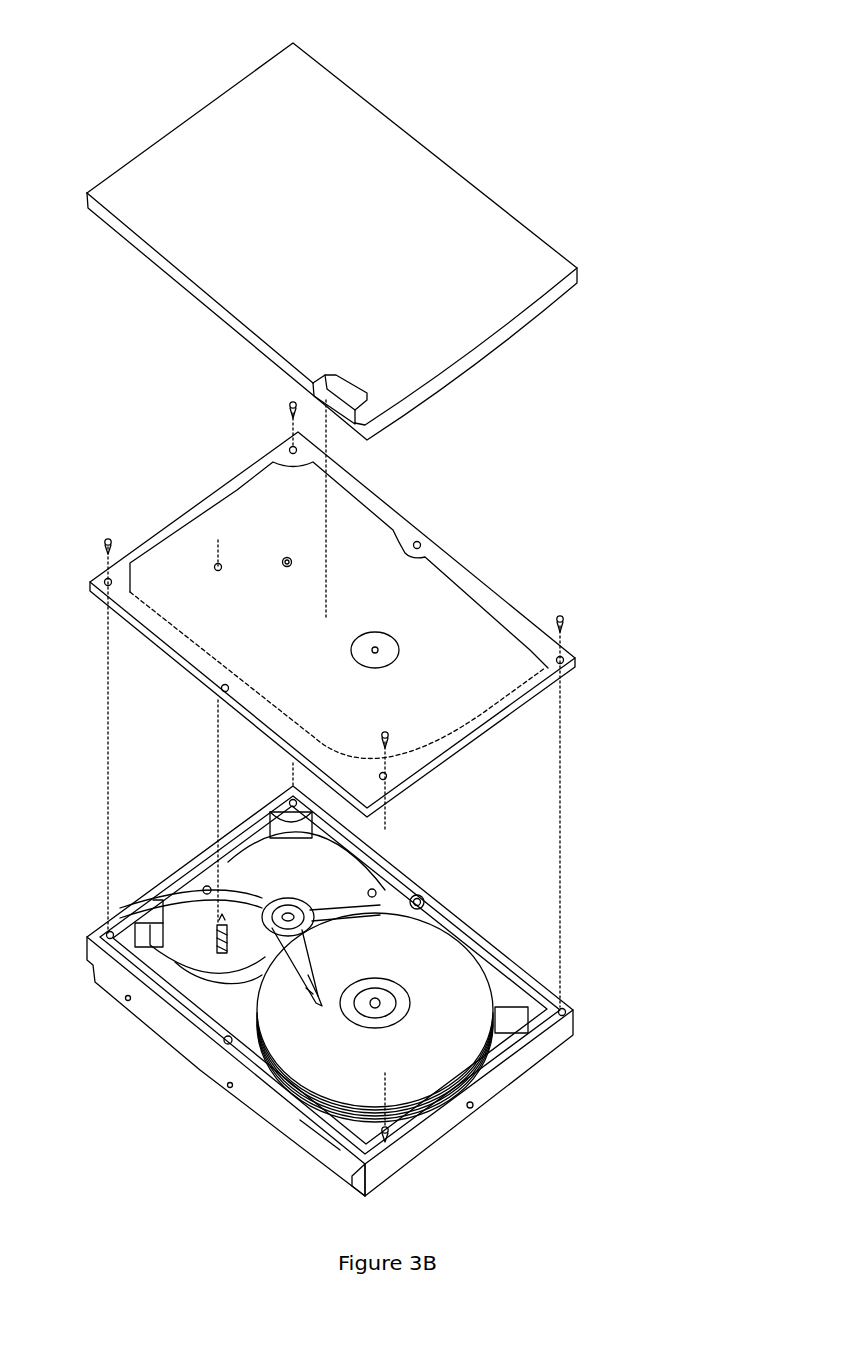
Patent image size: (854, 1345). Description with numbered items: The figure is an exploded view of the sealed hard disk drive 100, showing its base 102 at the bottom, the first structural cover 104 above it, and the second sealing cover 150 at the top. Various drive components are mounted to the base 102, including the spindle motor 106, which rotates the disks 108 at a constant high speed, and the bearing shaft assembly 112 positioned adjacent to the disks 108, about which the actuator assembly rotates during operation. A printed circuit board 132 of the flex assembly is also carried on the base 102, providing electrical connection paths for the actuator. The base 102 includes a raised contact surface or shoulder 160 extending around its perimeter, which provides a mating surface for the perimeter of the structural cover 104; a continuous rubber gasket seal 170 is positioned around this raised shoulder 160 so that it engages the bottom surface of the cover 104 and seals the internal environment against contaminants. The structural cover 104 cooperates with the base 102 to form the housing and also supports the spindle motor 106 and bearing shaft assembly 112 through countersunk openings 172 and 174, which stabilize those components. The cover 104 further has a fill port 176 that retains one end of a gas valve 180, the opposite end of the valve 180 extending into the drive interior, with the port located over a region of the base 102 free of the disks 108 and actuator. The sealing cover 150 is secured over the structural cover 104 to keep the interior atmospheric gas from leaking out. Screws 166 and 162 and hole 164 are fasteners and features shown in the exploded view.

The disk drive 100 is at (618, 495).
The sealing cover 150 is at (468, 170).
The structural cover 104 is at (478, 581).
The countersunk opening 172 is at (380, 656).
The countersunk opening 174 is at (287, 558).
The fill port 176 is at (220, 568).
The fastener / screw 166 is at (109, 538).
The fastener / screw 162 is at (392, 778).
The base 102 is at (470, 1107).
The mounting hole 164 is at (108, 932).
The seal 170 is at (430, 920).
The gas valve 180 is at (200, 938).
The bearing shaft assembly 112 is at (287, 912).
The disk 108 is at (387, 962).
The spindle motor 106 is at (398, 992).
The raised shoulder 160 is at (338, 1126).
The printed circuit board 132 is at (352, 1180).